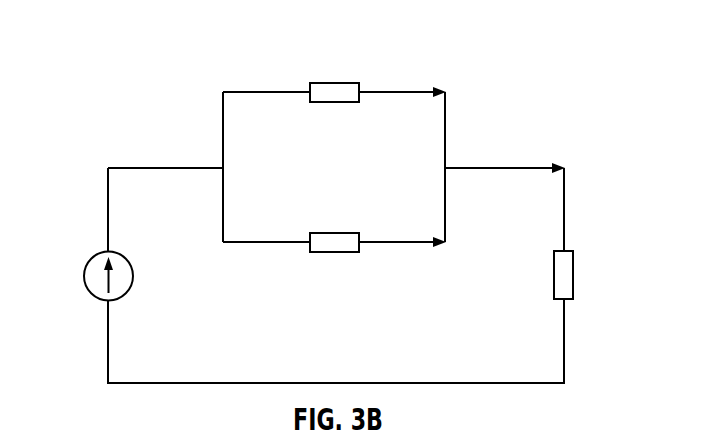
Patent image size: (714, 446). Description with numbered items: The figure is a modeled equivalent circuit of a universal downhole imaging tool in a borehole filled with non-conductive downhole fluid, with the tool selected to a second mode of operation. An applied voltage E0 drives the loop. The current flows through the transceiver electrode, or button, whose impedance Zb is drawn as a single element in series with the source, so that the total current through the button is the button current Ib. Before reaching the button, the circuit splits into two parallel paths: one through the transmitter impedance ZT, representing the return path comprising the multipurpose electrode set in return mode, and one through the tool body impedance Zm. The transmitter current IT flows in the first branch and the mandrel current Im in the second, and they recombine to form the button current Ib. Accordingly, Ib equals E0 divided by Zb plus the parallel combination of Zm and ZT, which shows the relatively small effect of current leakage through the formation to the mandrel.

The applied voltage E0 is at (92, 276).
The transmitter impedance ZT is at (334, 71).
The mandrel impedance Zm is at (334, 220).
The transceiver electrode impedance Zb is at (584, 275).
The transmitter current IT is at (420, 70).
The mandrel current Im is at (421, 266).
The button current Ib is at (538, 145).